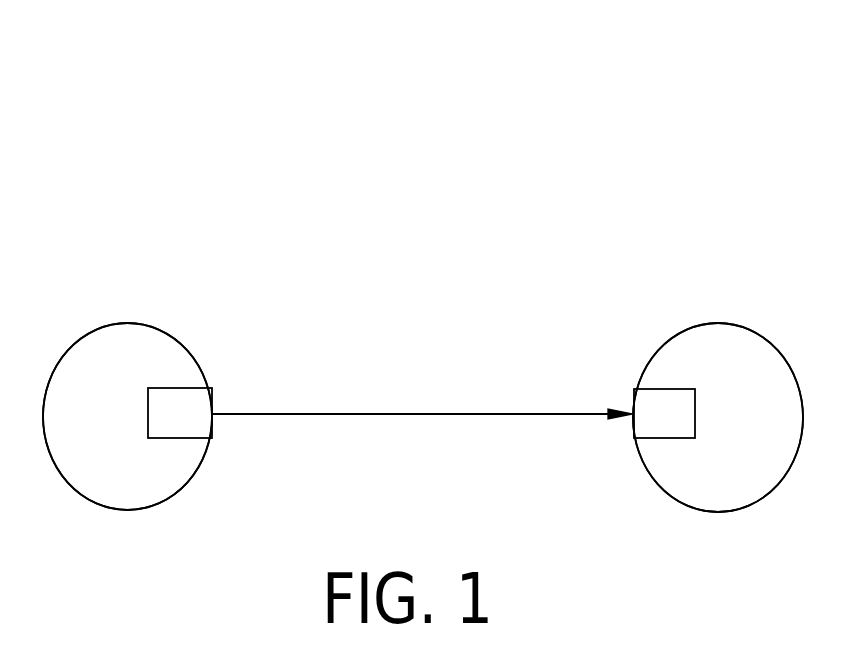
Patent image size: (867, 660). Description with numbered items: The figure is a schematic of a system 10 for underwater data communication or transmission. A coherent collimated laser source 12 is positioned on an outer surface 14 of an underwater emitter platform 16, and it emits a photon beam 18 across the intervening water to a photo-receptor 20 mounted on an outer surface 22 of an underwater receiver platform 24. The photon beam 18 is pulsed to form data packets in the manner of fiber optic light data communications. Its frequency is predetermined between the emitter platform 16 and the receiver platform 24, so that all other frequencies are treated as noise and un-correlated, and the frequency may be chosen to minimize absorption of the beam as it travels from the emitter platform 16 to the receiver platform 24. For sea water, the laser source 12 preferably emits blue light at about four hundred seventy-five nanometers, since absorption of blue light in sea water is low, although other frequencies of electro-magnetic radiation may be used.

The system 10 is at (654, 123).
The coherent collimated laser source 12 is at (177, 438).
The outer surface 14 is at (183, 345).
The underwater emitter platform 16 is at (123, 443).
The photon beam 18 is at (445, 413).
The photo-receptor 20 is at (666, 438).
The outer surface 22 is at (652, 355).
The underwater receiver platform 24 is at (767, 475).